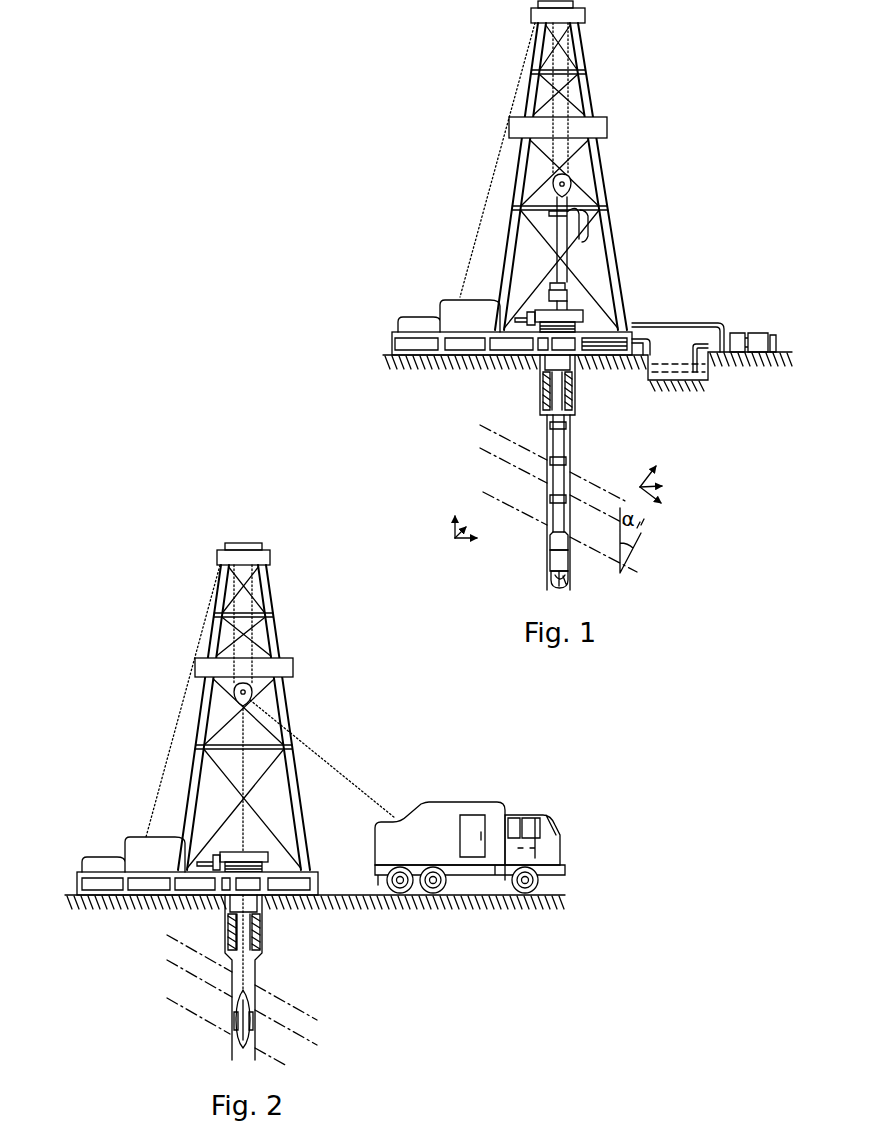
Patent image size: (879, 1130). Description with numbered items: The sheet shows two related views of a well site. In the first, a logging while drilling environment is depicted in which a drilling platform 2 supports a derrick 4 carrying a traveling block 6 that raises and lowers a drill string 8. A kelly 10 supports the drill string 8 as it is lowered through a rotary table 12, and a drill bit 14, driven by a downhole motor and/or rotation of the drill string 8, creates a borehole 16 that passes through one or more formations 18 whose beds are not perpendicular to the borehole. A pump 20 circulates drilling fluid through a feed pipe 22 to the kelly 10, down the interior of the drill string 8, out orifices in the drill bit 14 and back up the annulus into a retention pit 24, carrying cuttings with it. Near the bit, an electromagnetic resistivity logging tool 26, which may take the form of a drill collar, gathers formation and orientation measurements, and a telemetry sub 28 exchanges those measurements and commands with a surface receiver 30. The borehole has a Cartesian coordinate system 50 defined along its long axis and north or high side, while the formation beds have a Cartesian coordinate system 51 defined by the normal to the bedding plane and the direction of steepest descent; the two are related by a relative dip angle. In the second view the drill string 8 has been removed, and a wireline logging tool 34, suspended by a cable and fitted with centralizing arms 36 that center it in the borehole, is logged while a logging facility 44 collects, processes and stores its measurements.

In FIG. 1, the drilling platform 2 is at (392, 337).
In FIG. 2, the drilling platform 2 is at (318, 880).
In FIG. 1, the derrick 4 is at (592, 95).
In FIG. 2, the derrick 4 is at (307, 855).
In FIG. 1, the traveling block 6 is at (567, 184).
In FIG. 2, the traveling block 6 is at (252, 692).
In FIG. 1, the drill string 8 is at (561, 449).
In FIG. 1, the kelly 10 is at (561, 233).
In FIG. 1, the rotary table 12 is at (573, 308).
In FIG. 2, the rotary table 12 is at (254, 852).
In FIG. 1, the drill bit 14 is at (569, 582).
In FIG. 1, the borehole 16 is at (567, 457).
In FIG. 1, the formations 18 is at (481, 415).
In FIG. 2, the formations 18 is at (321, 1015).
In FIG. 1, the pump 20 is at (735, 332).
In FIG. 1, the feed pipe 22 is at (688, 322).
In FIG. 1, the retention pit 24 is at (666, 370).
In FIG. 1, the electromagnetic resistivity logging tool 26 is at (552, 558).
In FIG. 1, the telemetry sub 28 is at (552, 541).
In FIG. 1, the surface receiver 30 is at (564, 286).
In FIG. 2, the wireline logging tool 34 is at (242, 1017).
In FIG. 2, the centralizing arms 36 is at (233, 1027).
In FIG. 2, the logging facility 44 is at (445, 801).
In FIG. 1, the Cartesian coordinate system 50 is at (447, 539).
In FIG. 1, the Cartesian coordinate system 51 is at (663, 476).